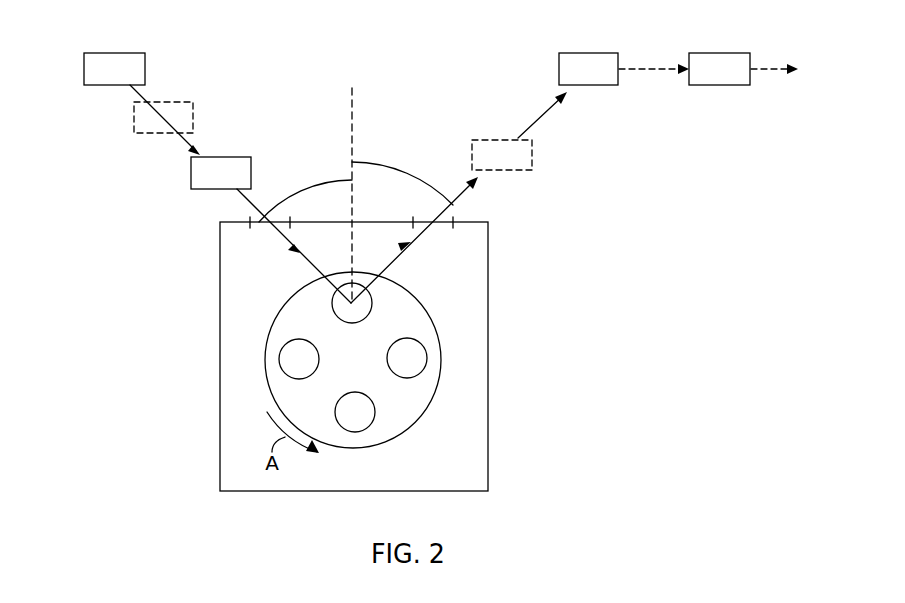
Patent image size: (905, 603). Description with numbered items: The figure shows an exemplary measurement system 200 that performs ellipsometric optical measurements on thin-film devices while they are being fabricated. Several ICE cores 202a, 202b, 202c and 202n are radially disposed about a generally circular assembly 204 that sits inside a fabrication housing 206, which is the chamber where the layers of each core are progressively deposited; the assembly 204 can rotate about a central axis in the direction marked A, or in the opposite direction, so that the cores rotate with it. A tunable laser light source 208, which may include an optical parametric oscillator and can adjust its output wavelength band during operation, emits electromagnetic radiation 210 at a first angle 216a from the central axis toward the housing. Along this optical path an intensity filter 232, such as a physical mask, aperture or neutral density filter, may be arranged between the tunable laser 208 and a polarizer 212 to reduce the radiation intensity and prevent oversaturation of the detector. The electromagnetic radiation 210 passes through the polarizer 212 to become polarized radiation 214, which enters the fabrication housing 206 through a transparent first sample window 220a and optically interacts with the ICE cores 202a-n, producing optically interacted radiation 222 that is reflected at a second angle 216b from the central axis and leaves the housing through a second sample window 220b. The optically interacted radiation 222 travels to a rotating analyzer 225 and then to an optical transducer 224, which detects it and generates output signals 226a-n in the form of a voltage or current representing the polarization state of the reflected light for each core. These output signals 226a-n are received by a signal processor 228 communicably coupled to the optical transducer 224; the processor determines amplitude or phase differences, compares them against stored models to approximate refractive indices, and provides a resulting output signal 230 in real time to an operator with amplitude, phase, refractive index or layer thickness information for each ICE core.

The measurement system 200 is at (275, 53).
The ICE core 202a is at (342, 304).
The ICE core 202b is at (290, 361).
The ICE core 202c is at (357, 420).
The ICE core 202n is at (420, 355).
The assembly 204 is at (415, 408).
The fabrication housing 206 is at (245, 491).
The tunable laser light source 208 is at (99, 80).
The electromagnetic radiation 210 is at (132, 95).
The polarizer 212 is at (206, 184).
The polarized radiation 214 is at (248, 203).
The first angle 216a is at (295, 196).
The second angle 216b is at (390, 163).
The first sample window 220a is at (253, 222).
The second sample window 220b is at (450, 213).
The optically interacted radiation 222 is at (400, 265).
The optical transducer 224 is at (573, 80).
The rotating analyzer 225 is at (487, 166).
The output signals 226a-n is at (657, 70).
The signal processor 228 is at (705, 80).
The resulting output signal 230 is at (773, 70).
The intensity filter 232 is at (145, 133).